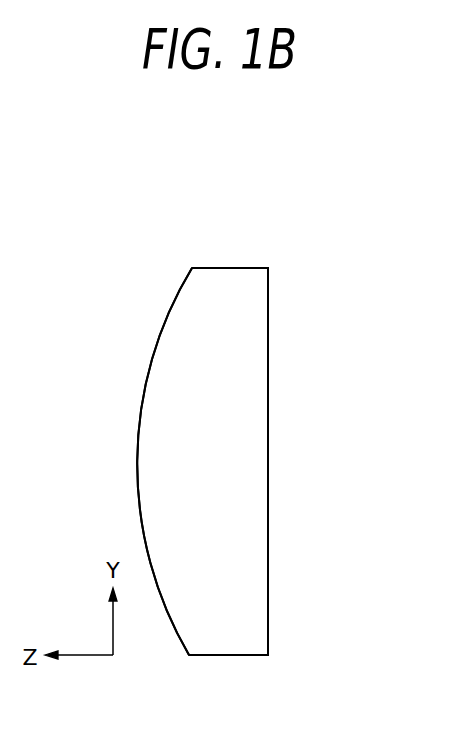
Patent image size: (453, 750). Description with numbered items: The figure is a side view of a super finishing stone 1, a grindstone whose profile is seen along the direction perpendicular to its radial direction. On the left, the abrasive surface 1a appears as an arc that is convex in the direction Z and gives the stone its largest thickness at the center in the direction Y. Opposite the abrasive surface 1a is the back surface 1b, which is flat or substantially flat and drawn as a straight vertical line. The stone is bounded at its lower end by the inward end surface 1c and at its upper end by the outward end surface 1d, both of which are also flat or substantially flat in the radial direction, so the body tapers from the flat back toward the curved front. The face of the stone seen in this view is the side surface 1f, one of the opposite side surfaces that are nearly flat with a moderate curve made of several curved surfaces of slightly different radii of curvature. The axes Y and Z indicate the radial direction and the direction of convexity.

The super finishing stone 1 is at (253, 227).
The abrasive surface 1a is at (141, 420).
The back surface 1b is at (268, 423).
The inward end surface 1c is at (233, 656).
The outward end surface 1d is at (220, 267).
The side surface 1f is at (237, 520).